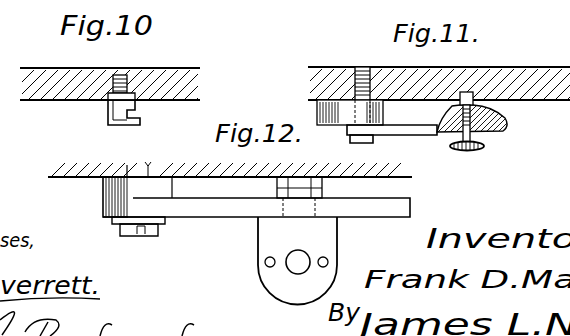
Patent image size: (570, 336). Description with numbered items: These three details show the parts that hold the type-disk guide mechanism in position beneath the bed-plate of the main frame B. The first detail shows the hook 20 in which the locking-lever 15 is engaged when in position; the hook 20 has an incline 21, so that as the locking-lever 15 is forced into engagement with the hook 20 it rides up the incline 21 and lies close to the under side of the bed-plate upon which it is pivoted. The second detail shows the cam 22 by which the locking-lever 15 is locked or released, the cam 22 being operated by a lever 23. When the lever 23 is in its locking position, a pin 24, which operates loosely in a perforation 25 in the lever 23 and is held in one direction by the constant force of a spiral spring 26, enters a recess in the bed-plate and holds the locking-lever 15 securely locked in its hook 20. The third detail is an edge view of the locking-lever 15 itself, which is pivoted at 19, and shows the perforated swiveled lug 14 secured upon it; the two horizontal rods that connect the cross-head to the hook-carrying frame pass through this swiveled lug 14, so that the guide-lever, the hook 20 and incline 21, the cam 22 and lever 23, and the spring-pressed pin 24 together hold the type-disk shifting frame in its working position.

In FIG. 10, the main frame B is at (110, 75).
In FIG. 11, the main frame B is at (503, 66).
In FIG. 12, the main frame B is at (163, 163).
In FIG. 12, the perforated swiveled lug 14 is at (297, 261).
In FIG. 12, the locking-lever 15 is at (256, 191).
In FIG. 12, the pivot 19 is at (120, 229).
In FIG. 10, the hook 20 is at (108, 116).
In FIG. 10, the incline 21 is at (133, 118).
In FIG. 11, the cam 22 is at (317, 108).
In FIG. 11, the lever 23 is at (392, 140).
In FIG. 11, the pin 24 is at (467, 155).
In FIG. 11, the perforation 25 is at (478, 140).
In FIG. 11, the spiral spring 26 is at (480, 108).